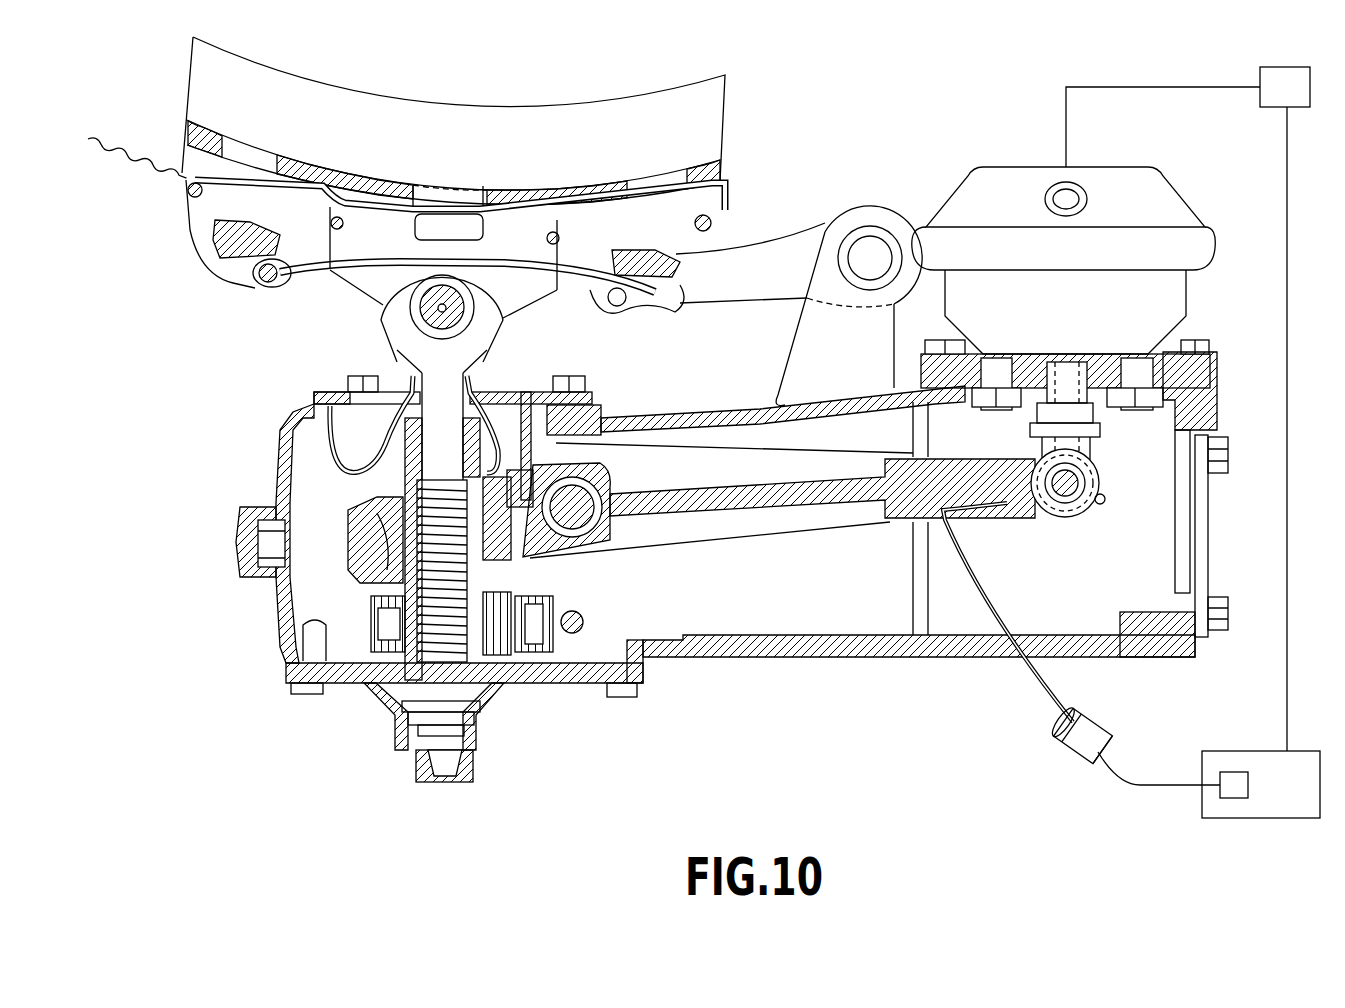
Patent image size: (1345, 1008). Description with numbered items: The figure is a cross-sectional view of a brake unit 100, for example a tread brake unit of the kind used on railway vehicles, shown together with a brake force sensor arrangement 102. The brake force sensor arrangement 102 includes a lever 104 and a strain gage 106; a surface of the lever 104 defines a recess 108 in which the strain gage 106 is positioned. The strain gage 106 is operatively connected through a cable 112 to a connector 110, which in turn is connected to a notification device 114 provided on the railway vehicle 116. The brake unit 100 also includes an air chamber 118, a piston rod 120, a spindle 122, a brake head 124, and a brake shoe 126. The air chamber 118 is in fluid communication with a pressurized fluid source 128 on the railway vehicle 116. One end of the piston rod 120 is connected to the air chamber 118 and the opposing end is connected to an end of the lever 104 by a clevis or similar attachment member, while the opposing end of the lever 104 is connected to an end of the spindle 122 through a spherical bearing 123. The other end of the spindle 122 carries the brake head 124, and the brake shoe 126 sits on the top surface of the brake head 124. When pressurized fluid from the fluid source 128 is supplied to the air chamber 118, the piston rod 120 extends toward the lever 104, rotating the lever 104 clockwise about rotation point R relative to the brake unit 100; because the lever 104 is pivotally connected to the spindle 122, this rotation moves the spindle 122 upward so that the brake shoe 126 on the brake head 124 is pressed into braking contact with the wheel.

The brake unit 100 is at (910, 150).
The brake force sensor arrangement 102 is at (785, 560).
The lever 104 is at (723, 532).
The strain gage 106 is at (993, 510).
The recess 108 is at (932, 535).
The connector 110 is at (1059, 748).
The cable 112 is at (990, 592).
The notification device 114 is at (1233, 772).
The railway vehicle 116 is at (1209, 486).
The air chamber 118 is at (1183, 247).
The piston rod 120 is at (1063, 418).
The spindle 122 is at (430, 430).
The spherical bearing 123 is at (393, 545).
The brake head 124 is at (716, 213).
The brake shoe 126 is at (493, 157).
The pressurized fluid source 128 is at (1270, 108).
The rotation point R is at (575, 512).